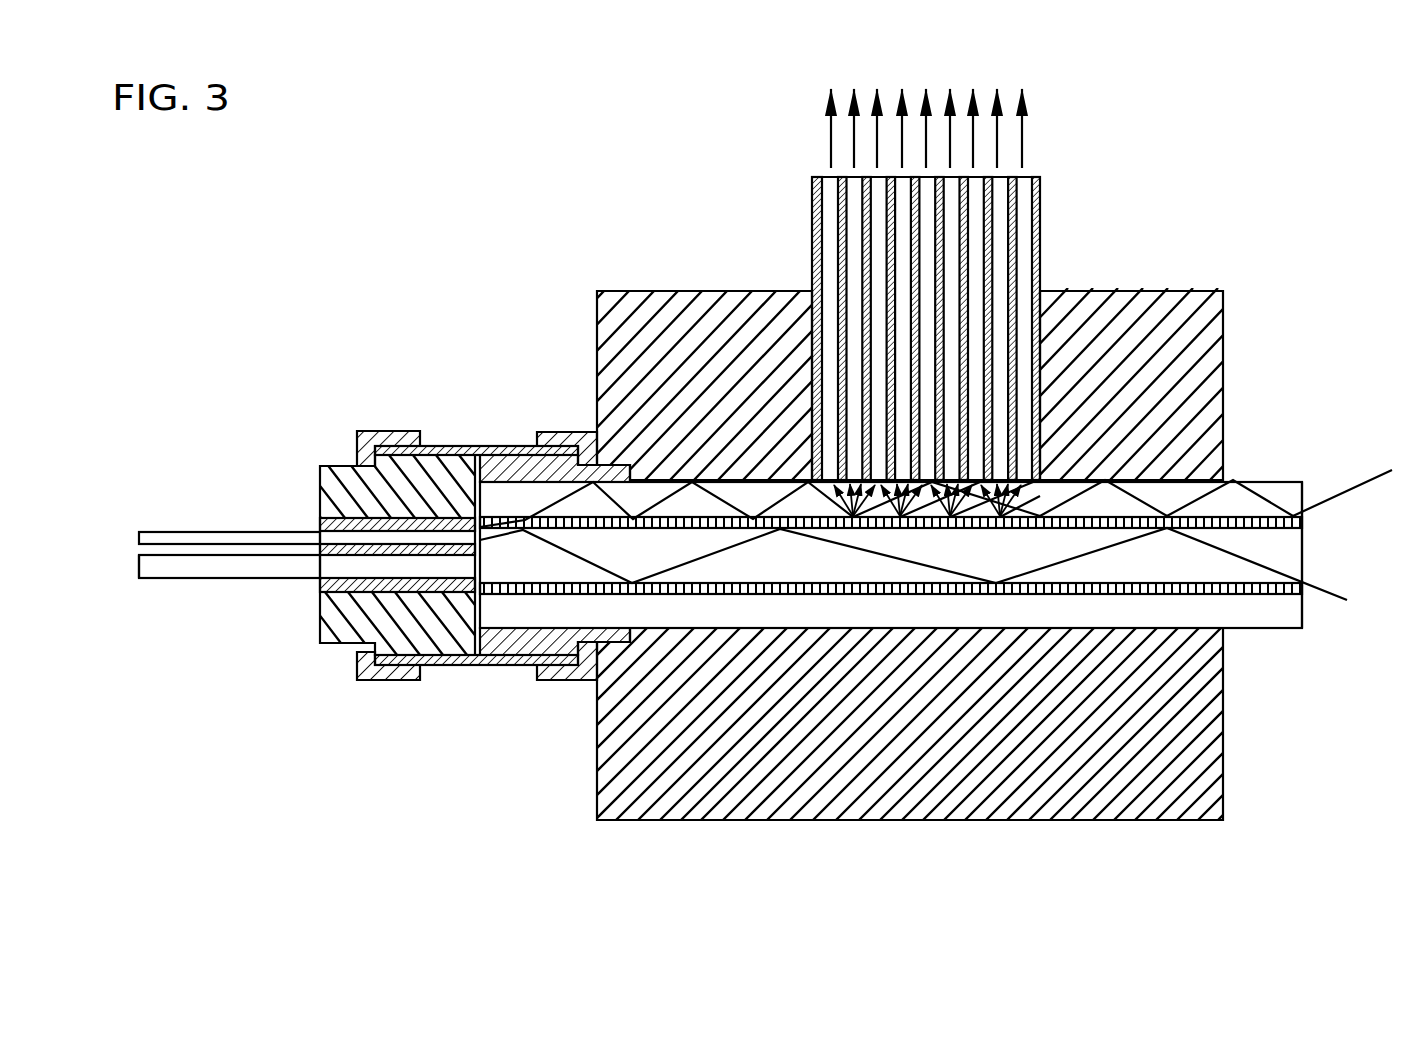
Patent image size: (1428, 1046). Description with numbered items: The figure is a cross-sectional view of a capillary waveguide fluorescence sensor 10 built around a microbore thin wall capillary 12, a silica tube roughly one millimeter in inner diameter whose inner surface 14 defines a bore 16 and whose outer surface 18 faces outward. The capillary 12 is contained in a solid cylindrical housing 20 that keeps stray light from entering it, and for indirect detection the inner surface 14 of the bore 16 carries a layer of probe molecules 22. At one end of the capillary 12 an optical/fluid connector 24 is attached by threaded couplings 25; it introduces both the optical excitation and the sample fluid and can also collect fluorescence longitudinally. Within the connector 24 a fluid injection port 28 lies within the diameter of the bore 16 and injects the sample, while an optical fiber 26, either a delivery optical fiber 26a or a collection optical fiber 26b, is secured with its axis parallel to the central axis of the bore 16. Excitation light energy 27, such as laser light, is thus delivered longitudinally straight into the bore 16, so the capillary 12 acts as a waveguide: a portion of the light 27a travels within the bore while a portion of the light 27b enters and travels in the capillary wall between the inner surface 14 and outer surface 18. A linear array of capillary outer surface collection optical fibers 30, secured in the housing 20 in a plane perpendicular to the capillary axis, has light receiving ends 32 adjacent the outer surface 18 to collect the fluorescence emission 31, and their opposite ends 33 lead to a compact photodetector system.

The capillary waveguide fluorescence sensor 10 is at (572, 174).
The microbore thin wall capillary 12 is at (1250, 480).
The inner surface 14 is at (1283, 520).
The bore 16 is at (1283, 560).
The outer surface 18 is at (1282, 480).
The cylindrical housing 20 is at (787, 821).
The layer of probe molecules 22 is at (1288, 513).
The optical/fluid connector 24 is at (320, 620).
The threaded couplings 25 is at (420, 668).
The optical fiber 26 is at (215, 515).
The delivery optical fiber 26a is at (229, 538).
The collection optical fiber 26b is at (192, 538).
The excitation light energy 27 is at (487, 530).
The portion of the light traveling within the bore 27a is at (565, 553).
The portion of the light traveling in the capillary wall 27b is at (538, 485).
The fluid injection port 28 is at (185, 580).
The capillary outer surface collection optical fiber 30 is at (972, 222).
The fluorescence emission 31 is at (854, 147).
The light receiving end 32 is at (1023, 470).
The opposite end 33 is at (1023, 175).